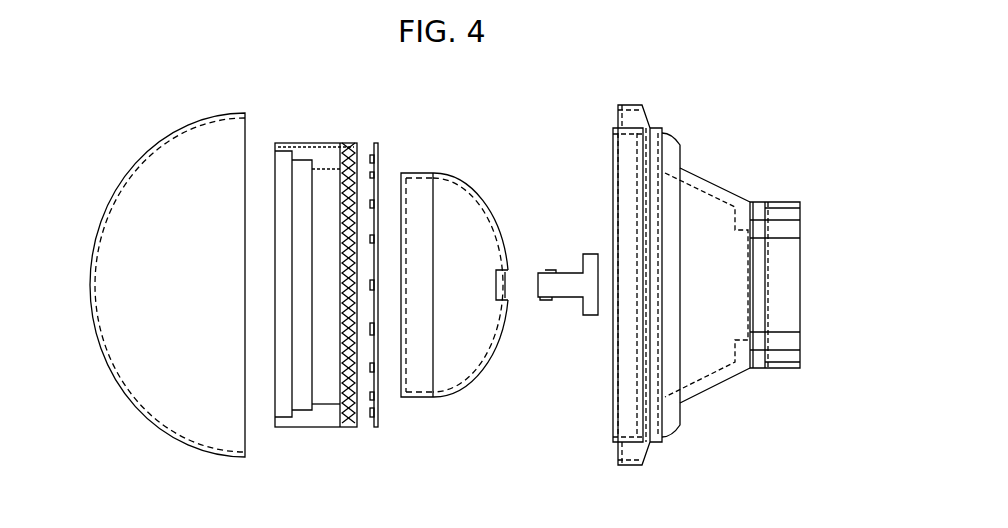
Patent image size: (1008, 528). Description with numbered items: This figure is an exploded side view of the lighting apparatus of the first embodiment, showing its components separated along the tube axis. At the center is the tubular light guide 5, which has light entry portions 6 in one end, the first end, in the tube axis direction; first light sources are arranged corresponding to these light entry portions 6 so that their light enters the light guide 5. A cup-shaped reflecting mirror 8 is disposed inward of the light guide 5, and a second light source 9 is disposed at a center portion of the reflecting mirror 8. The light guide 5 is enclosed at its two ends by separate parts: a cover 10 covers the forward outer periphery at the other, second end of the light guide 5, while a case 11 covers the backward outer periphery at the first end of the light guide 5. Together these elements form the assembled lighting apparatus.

The tubular light guide 5 is at (322, 143).
The light entry portions 6 is at (342, 175).
The cup-shaped reflecting mirror 8 is at (455, 182).
The light source 9 is at (548, 280).
The cover 10 is at (167, 433).
The case 11 is at (718, 380).